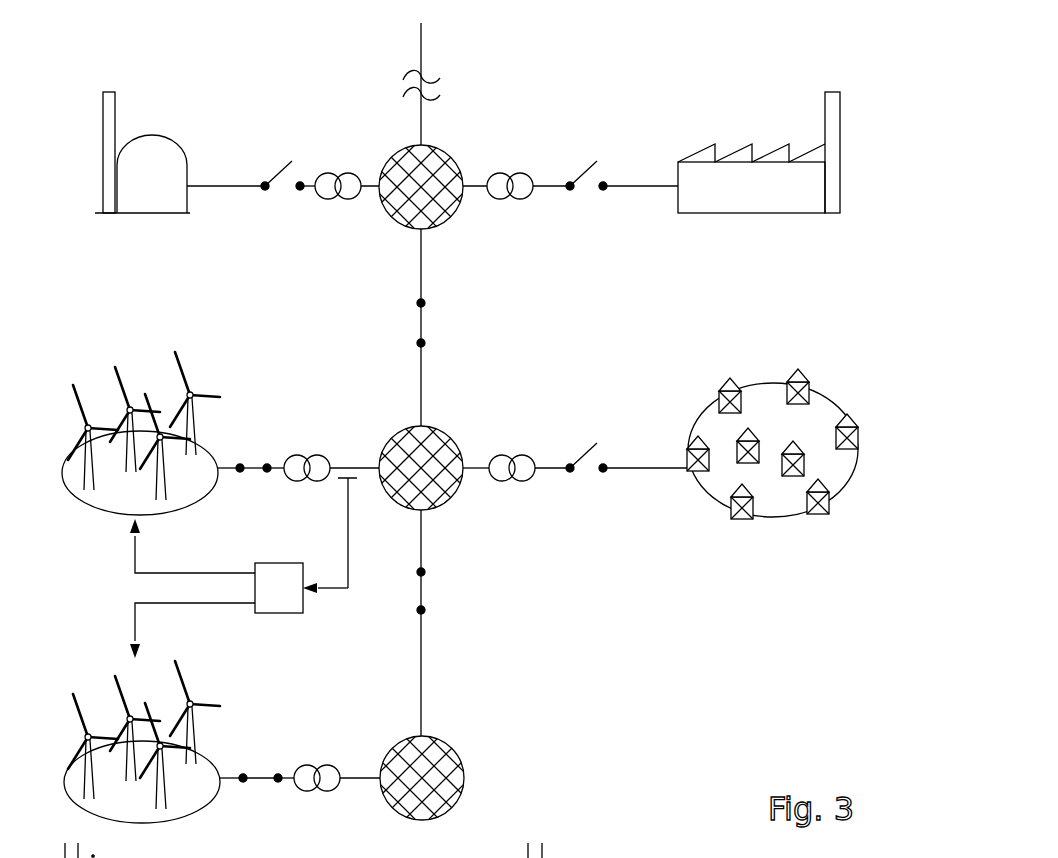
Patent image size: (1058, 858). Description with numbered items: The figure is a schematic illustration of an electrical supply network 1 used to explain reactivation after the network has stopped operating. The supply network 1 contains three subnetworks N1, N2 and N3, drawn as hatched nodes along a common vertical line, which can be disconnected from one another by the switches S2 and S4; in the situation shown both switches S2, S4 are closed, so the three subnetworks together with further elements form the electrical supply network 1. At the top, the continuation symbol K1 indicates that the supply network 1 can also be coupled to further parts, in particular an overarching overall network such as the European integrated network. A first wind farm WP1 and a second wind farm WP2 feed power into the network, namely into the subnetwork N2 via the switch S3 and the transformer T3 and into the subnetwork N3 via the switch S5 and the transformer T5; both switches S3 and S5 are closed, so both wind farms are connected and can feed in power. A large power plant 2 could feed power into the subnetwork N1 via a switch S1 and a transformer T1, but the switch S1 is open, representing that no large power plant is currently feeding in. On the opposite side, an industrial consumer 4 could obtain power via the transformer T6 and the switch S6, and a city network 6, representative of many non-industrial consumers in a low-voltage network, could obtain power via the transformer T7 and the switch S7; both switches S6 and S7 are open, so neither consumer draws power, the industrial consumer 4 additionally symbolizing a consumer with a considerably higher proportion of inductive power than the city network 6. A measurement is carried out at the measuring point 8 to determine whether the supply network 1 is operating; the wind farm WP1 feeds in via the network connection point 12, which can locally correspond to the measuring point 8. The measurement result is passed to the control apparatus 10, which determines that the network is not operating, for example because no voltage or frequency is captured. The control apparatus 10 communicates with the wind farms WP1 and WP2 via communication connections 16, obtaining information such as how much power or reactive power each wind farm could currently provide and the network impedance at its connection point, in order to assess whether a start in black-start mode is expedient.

The electrical supply network 1 is at (780, 672).
The large power plant 2 is at (182, 112).
The industrial consumer 4 is at (752, 90).
The city network 6 is at (852, 372).
The measuring point 8 is at (355, 445).
The control apparatus 10 is at (287, 613).
The network connection point 12 is at (364, 476).
The communication connections 16 is at (135, 556).
The continuation symbol K1 is at (468, 93).
The first subnetwork N1 is at (452, 214).
The second subnetwork N2 is at (450, 497).
The third subnetwork N3 is at (458, 792).
The switch S1 is at (282, 159).
The switch S2 is at (442, 323).
The switch S3 is at (253, 453).
The switch S4 is at (442, 591).
The switch S5 is at (260, 758).
The switch S6 is at (586, 158).
The switch S7 is at (586, 438).
The transformer T1 is at (338, 168).
The transformer T3 is at (307, 452).
The transformer T5 is at (317, 762).
The transformer T6 is at (510, 169).
The transformer T7 is at (512, 450).
The first wind farm WP1 is at (137, 432).
The second wind farm WP2 is at (137, 742).